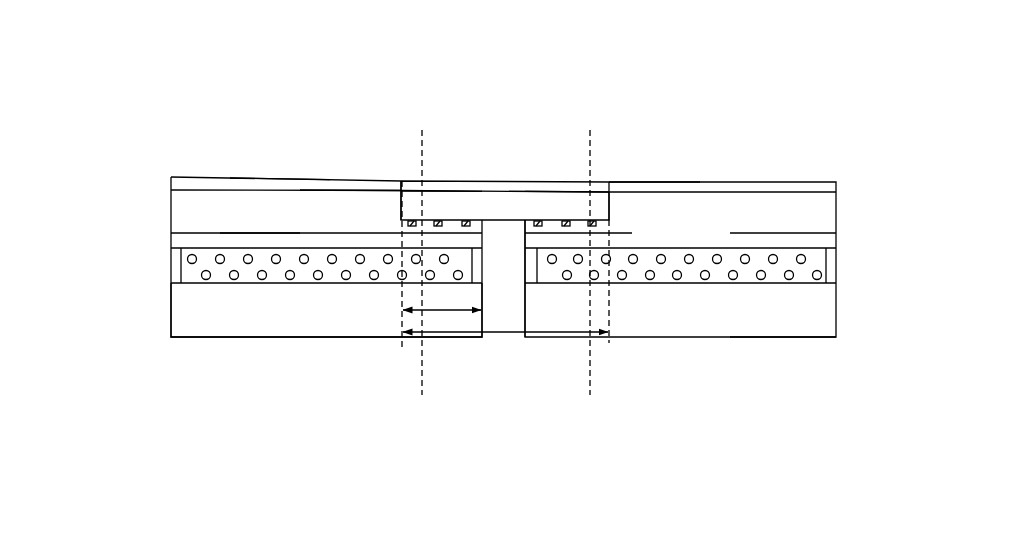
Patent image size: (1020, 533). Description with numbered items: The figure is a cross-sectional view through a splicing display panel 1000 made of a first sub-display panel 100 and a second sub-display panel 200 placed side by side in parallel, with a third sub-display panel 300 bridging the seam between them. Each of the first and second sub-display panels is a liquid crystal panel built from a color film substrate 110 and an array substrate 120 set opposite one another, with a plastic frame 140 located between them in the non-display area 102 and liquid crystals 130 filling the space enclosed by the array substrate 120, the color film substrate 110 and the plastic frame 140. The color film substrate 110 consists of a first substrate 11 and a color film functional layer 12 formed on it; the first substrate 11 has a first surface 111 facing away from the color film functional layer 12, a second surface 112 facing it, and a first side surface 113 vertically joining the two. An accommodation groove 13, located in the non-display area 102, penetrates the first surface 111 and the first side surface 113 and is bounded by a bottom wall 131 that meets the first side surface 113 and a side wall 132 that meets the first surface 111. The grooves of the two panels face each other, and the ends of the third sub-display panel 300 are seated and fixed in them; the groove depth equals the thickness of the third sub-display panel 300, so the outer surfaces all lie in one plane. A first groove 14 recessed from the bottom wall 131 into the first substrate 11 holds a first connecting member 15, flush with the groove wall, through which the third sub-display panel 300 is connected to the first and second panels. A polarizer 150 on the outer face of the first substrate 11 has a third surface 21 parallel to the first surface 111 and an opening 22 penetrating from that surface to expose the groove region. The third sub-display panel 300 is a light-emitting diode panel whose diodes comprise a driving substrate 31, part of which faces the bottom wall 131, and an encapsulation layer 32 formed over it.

The splicing display panel 1000 is at (467, 20).
The first sub-display panel 100 is at (88, 153).
The second sub-display panel 200 is at (838, 178).
The third sub-display panel 300 is at (558, 128).
The driving substrate 31 is at (462, 191).
The encapsulation layer 32 is at (545, 191).
The third surface 21 is at (278, 178).
The opening 22 is at (606, 181).
The first groove 14 is at (404, 220).
The first connecting member 15 is at (436, 221).
The accommodation groove 13 is at (638, 165).
The bottom wall 131 is at (577, 219).
The side wall 132 is at (612, 209).
The polarizer 150 is at (187, 183).
The color film substrate 110 is at (128, 185).
The first substrate 11 is at (185, 208).
The color film functional layer 12 is at (185, 242).
The liquid crystals 130 is at (173, 260).
The plastic frame 140 is at (175, 273).
The array substrate 120 is at (187, 322).
The first surface 111 is at (340, 193).
The second surface 112 is at (262, 236).
The first side surface 113 is at (526, 235).
The non-display area 102 is at (554, 392).